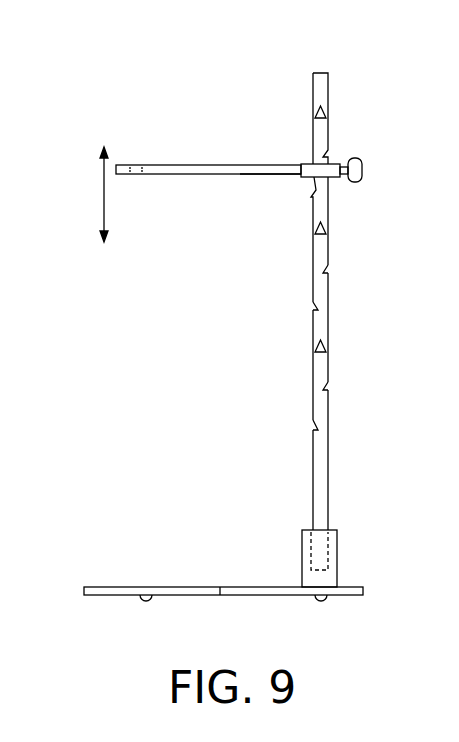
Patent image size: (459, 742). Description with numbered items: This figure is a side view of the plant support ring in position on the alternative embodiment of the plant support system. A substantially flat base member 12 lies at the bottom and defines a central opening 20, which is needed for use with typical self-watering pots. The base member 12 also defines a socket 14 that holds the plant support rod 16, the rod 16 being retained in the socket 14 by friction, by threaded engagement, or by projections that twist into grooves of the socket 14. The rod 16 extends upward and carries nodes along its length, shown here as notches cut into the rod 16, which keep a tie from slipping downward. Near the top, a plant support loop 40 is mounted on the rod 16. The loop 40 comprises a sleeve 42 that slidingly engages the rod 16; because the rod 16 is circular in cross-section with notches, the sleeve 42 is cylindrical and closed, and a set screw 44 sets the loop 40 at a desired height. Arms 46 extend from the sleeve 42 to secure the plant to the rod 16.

The base member 12 is at (120, 586).
The socket 14 is at (338, 565).
The plant support rod 16 is at (330, 472).
The central opening 20 is at (250, 590).
The plant support loop 40 is at (277, 175).
The sleeve 42 is at (333, 160).
The set screw 44 is at (364, 173).
The arms 46 is at (208, 165).